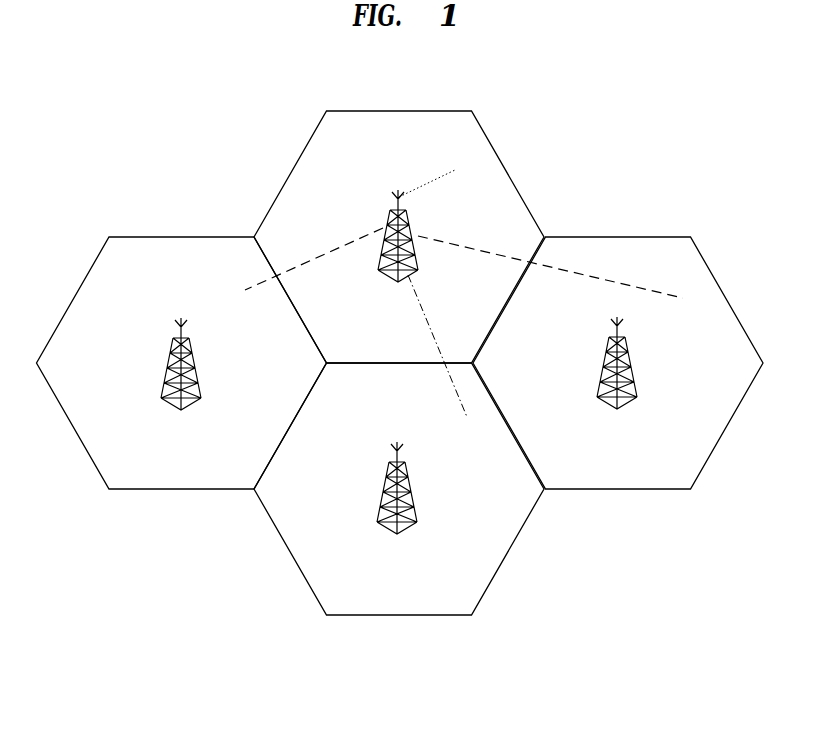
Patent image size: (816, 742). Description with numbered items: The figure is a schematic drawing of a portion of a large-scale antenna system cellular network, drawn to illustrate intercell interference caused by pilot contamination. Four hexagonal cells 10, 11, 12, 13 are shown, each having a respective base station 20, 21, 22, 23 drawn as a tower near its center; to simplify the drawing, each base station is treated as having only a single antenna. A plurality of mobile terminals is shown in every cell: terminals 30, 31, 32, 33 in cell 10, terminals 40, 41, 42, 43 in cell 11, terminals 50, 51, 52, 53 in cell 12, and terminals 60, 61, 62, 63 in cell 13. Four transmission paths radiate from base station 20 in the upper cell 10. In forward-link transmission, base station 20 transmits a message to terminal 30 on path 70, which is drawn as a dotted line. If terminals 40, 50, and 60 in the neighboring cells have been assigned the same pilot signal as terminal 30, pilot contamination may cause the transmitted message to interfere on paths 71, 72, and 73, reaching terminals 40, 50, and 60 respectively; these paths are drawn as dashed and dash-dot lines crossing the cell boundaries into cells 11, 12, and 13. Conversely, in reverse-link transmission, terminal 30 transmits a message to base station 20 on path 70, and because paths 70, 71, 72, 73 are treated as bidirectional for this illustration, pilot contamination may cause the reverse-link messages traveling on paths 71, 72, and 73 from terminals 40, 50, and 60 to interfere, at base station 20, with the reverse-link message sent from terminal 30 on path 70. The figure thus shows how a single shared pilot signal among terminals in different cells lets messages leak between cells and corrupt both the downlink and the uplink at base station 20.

The cell 10 is at (510, 177).
The cell 11 is at (723, 432).
The cell 12 is at (307, 583).
The cell 13 is at (88, 453).
The base station 20 is at (417, 233).
The base station 21 is at (632, 365).
The base station 22 is at (410, 493).
The base station 23 is at (193, 365).
The mobile terminal 30 is at (461, 172).
The mobile terminal 31 is at (463, 307).
The mobile terminal 32 is at (330, 322).
The mobile terminal 33 is at (356, 170).
The mobile terminal 40 is at (682, 300).
The mobile terminal 41 is at (682, 437).
The mobile terminal 42 is at (548, 450).
The mobile terminal 43 is at (574, 297).
The mobile terminal 50 is at (465, 427).
The mobile terminal 51 is at (465, 560).
The mobile terminal 52 is at (330, 577).
The mobile terminal 53 is at (355, 422).
The mobile terminal 60 is at (247, 300).
The mobile terminal 61 is at (247, 437).
The mobile terminal 62 is at (110, 450).
The mobile terminal 63 is at (137, 295).
The path 70 is at (427, 185).
The path 71 is at (582, 270).
The path 72 is at (425, 317).
The path 73 is at (332, 248).